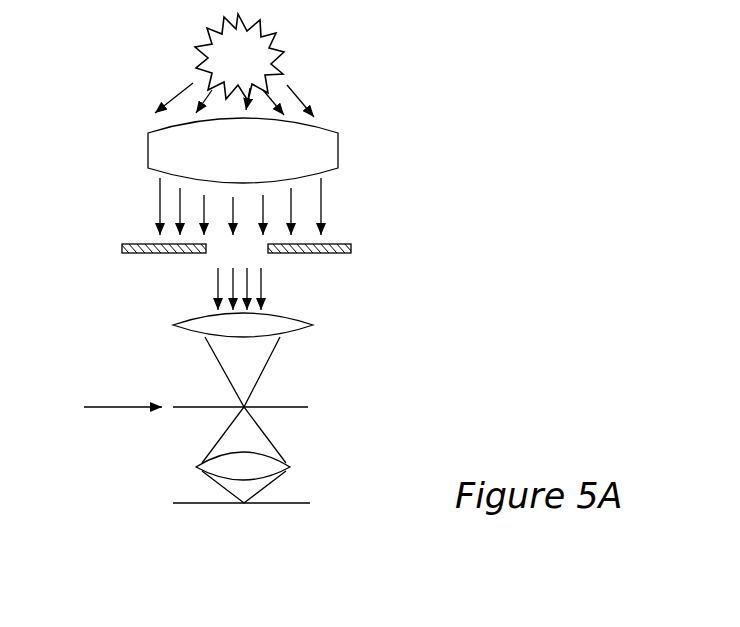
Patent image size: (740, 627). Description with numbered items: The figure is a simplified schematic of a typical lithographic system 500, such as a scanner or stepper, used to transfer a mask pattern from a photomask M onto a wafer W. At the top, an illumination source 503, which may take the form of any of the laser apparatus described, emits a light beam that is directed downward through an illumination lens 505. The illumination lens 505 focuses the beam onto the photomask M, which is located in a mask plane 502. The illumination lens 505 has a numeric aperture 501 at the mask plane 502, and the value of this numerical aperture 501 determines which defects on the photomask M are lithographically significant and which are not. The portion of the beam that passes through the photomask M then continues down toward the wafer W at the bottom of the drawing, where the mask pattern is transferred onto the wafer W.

The lithographic system 500 is at (363, 53).
The illumination source 503 is at (197, 58).
The illumination lens 505 is at (173, 325).
The numeric aperture 501 is at (268, 360).
The mask plane 502 is at (102, 405).
The photomask M is at (292, 407).
The wafer W is at (198, 503).